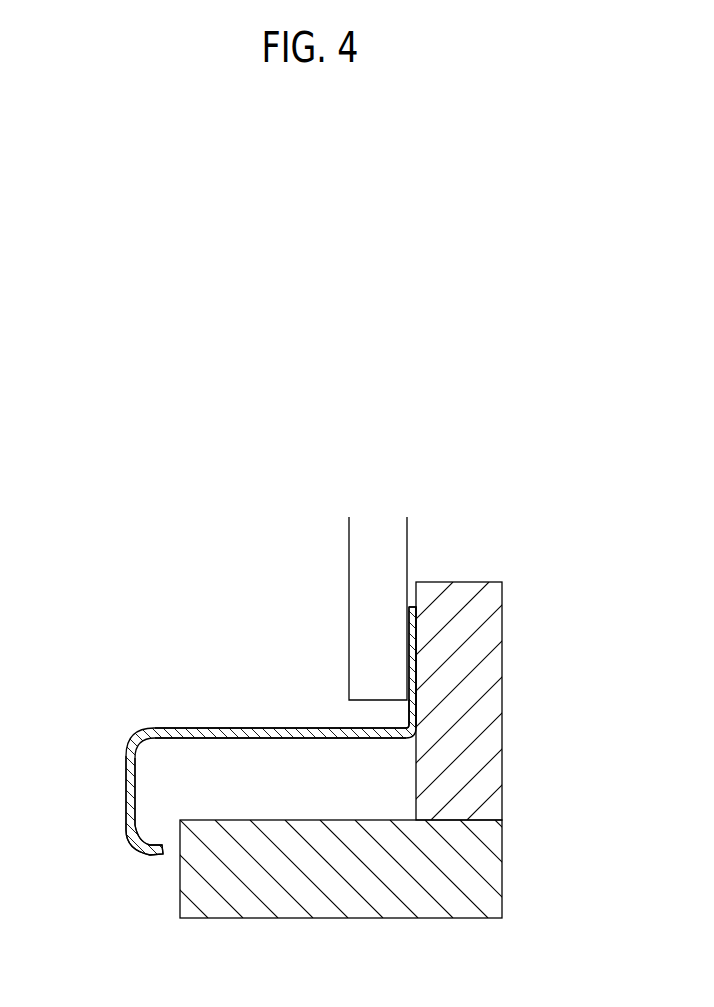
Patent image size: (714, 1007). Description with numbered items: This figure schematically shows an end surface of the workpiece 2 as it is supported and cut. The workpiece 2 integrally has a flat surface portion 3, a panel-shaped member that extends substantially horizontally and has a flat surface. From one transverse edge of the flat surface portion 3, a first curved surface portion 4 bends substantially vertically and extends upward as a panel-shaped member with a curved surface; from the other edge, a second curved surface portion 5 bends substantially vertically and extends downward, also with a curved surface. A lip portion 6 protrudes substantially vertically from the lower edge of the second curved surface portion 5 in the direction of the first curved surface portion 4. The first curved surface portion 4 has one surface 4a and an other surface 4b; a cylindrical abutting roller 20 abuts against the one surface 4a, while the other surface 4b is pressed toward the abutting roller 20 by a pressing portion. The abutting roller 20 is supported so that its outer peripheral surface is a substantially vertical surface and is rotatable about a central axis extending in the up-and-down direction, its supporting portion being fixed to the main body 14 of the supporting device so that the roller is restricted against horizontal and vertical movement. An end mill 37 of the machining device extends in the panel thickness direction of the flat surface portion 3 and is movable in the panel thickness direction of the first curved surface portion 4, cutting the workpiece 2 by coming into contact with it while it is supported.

The workpiece 2 is at (195, 710).
The flat surface portion 3 is at (318, 739).
The first curved surface portion 4 is at (410, 604).
The one surface of the first curved surface portion 4a is at (417, 640).
The other surface of the first curved surface portion 4b is at (408, 714).
The second curved surface portion 5 is at (126, 791).
The lip portion 6 is at (143, 856).
The main body 14 is at (400, 919).
The abutting roller 20 is at (503, 697).
The end mill 37 is at (349, 581).